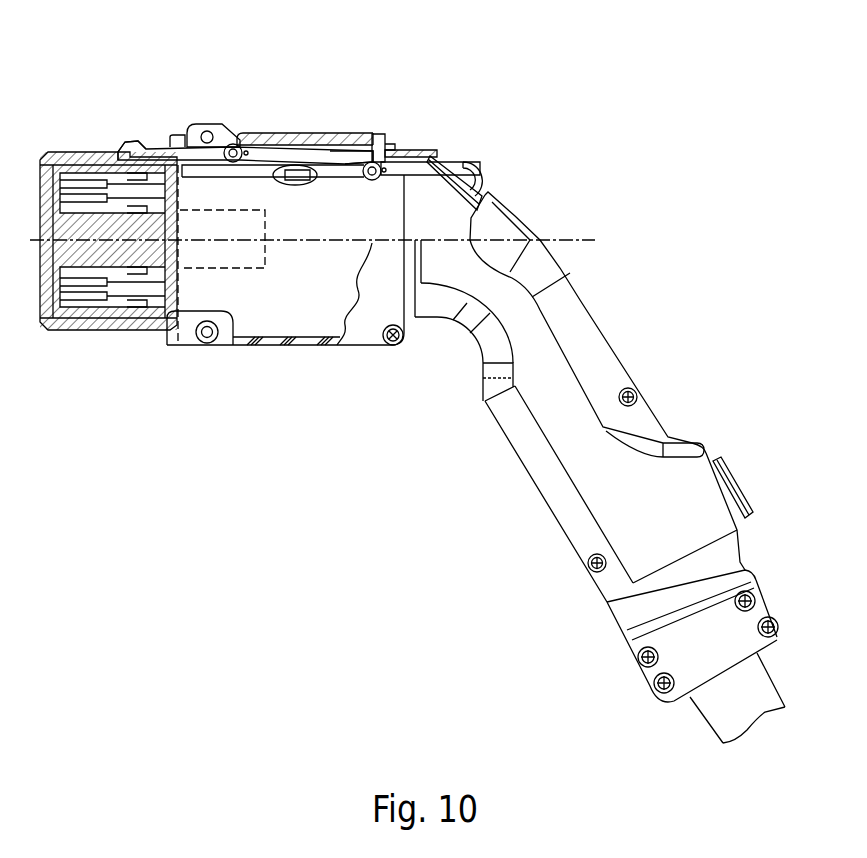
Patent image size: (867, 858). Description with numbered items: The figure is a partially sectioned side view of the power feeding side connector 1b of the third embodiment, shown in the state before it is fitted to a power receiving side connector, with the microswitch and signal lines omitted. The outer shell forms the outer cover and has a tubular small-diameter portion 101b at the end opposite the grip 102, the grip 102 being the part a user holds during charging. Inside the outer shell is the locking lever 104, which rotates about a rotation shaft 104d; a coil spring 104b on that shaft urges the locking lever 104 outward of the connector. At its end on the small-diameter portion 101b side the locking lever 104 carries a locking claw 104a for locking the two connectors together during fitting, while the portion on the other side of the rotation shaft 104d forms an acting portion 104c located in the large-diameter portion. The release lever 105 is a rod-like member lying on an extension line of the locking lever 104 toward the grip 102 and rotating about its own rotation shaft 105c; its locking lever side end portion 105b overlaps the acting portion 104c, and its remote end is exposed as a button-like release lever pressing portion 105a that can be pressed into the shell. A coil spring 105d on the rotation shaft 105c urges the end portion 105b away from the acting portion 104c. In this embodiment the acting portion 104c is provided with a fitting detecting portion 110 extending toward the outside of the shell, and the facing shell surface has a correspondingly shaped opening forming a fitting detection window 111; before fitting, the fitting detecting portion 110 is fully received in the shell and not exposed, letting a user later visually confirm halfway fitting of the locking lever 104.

The power feeding side connector 1b is at (310, 26).
The small-diameter portion 101b is at (287, 134).
The grip 102 is at (522, 220).
The locking lever 104 is at (158, 147).
The locking claw 104a is at (123, 142).
The coil spring 104b is at (236, 141).
The acting portion 104c is at (358, 149).
The rotation shaft 104d is at (226, 143).
The release lever 105 is at (338, 181).
The release lever pressing portion 105a is at (552, 151).
The locking lever side end portion 105b is at (298, 187).
The rotation shaft 105c is at (380, 165).
The coil spring 105d is at (373, 187).
The fitting detecting portion 110 is at (388, 144).
The fitting detection window 111 is at (377, 134).